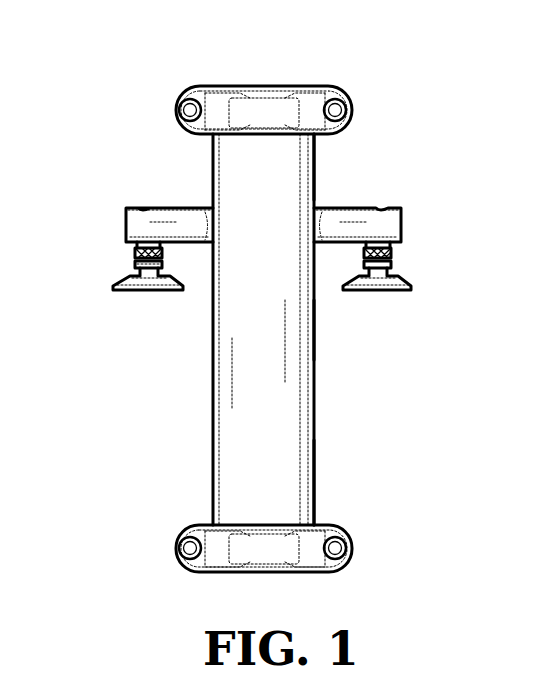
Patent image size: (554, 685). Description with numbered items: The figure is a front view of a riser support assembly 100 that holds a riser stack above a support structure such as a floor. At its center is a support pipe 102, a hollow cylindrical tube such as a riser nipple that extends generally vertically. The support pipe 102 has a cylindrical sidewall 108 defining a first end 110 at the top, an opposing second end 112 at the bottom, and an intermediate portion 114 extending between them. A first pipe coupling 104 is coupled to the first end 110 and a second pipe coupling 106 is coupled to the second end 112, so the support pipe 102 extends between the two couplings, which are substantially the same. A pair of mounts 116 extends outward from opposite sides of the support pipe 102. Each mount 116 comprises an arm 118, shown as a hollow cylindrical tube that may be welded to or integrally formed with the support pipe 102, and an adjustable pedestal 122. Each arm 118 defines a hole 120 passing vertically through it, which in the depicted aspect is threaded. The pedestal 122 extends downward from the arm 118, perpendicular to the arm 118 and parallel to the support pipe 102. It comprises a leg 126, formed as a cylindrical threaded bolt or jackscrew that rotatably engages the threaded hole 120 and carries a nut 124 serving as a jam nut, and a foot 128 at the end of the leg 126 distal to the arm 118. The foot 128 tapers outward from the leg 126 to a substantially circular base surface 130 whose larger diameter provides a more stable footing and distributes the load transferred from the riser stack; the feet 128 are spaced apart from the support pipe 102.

The riser support assembly 100 is at (418, 112).
The support pipe 102 is at (178, 420).
The first pipe coupling 104 is at (237, 112).
The second pipe coupling 106 is at (310, 556).
The cylindrical sidewall 108 is at (280, 423).
The first end 110 is at (316, 148).
The second end 112 is at (315, 498).
The intermediate portion 114 is at (315, 333).
The mount 116 is at (288, 238).
The arm 118 is at (182, 216).
The hole 120 is at (145, 203).
The adjustable pedestal 122 is at (408, 263).
The nut 124 is at (378, 256).
The leg 126 is at (140, 255).
The foot 128 is at (128, 274).
The base surface 130 is at (155, 306).